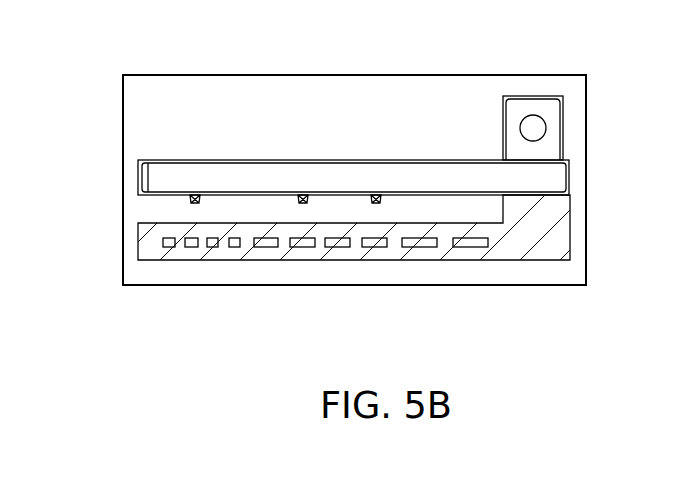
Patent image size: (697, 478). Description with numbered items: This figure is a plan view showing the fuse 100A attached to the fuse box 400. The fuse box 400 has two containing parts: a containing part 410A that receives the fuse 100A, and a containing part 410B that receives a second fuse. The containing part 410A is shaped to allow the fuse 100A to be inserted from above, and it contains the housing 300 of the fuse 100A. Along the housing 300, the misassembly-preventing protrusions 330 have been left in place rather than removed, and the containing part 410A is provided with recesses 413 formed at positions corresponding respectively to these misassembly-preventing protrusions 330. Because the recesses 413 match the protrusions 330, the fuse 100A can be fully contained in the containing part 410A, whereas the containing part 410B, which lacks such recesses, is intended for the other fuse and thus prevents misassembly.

The fuse box 400 is at (603, 88).
The fuse 100A is at (535, 178).
The containing part 410A is at (137, 183).
The containing part 410B is at (137, 248).
The housing 300 is at (247, 180).
The misassembly-preventing protrusion 330 is at (195, 195).
The recess 413 is at (196, 203).